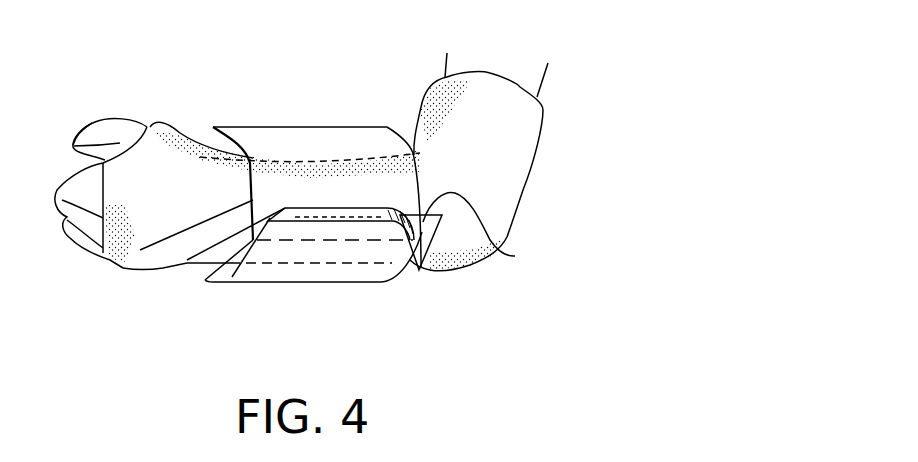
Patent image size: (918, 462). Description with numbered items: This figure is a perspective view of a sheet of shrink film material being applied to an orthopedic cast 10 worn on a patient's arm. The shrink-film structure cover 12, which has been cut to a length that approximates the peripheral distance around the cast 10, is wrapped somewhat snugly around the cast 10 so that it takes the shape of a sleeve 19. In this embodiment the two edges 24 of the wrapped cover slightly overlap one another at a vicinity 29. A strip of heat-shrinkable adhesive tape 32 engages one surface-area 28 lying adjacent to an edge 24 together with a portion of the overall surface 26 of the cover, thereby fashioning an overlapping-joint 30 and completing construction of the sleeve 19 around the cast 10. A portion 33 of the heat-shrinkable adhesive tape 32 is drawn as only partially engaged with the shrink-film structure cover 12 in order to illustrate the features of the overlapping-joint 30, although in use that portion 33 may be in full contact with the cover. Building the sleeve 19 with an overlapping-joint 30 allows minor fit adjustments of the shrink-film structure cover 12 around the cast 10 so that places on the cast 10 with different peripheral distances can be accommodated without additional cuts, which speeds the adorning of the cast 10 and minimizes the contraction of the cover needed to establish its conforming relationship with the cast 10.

The orthopedic cast 10 is at (183, 203).
The shrink-film structure cover 12 is at (317, 147).
The sleeve 19 is at (123, 265).
The edge 24 is at (207, 275).
The overall surface 26 is at (347, 193).
The surface-area 28 is at (344, 197).
The vicinity 29 is at (187, 260).
The overlapping-joint 30 is at (317, 230).
The heat-shrinkable adhesive tape 32 is at (310, 207).
The portion 33 is at (419, 270).